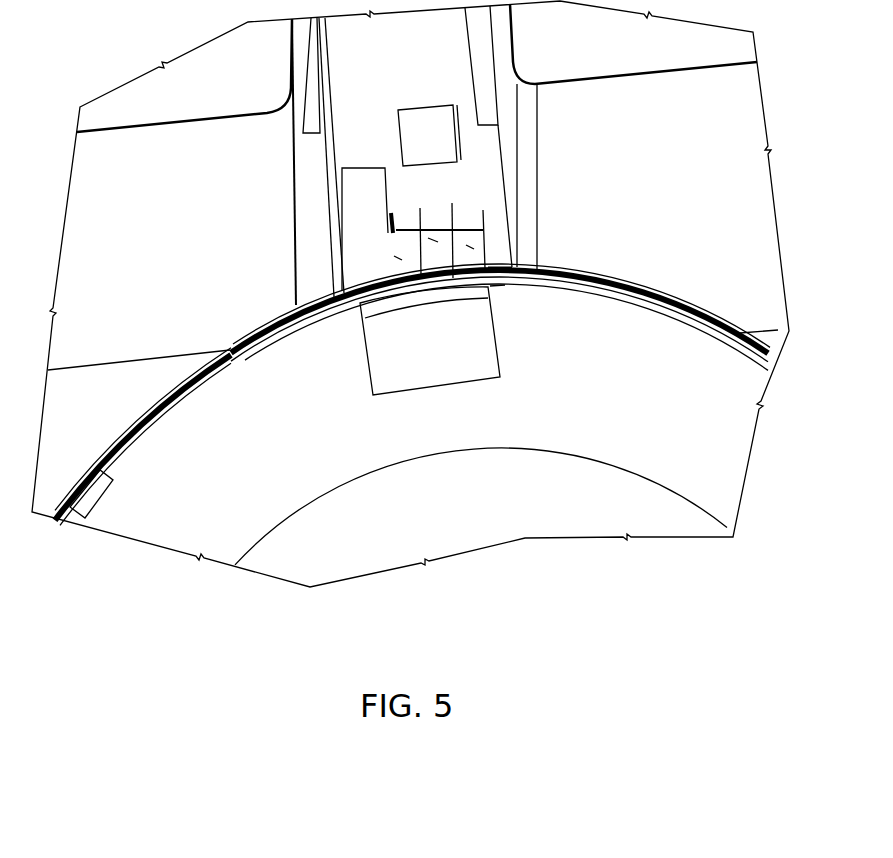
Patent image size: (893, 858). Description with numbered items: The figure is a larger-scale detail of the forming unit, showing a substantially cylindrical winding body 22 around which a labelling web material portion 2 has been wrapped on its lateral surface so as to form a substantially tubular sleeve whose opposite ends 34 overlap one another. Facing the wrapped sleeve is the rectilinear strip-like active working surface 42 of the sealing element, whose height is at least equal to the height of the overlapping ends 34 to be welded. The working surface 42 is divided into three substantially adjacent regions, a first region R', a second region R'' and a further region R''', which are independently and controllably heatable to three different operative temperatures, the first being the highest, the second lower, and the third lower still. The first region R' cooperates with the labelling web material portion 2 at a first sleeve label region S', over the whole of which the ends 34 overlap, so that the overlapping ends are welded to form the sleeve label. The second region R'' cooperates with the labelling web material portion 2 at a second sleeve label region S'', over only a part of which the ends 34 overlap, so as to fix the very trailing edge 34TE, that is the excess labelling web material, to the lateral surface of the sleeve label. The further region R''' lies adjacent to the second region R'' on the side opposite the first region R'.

The labelling web material portion 2 is at (182, 377).
The winding body 22 is at (717, 462).
The overlapping ends 34 is at (316, 300).
The trailing edge 34TE is at (500, 267).
The working surface 42 is at (458, 218).
The first region R' is at (333, 191).
The second region R'' is at (545, 205).
The further region R''' is at (321, 226).
The first sleeve label region S' is at (430, 341).
The second sleeve label region S'' is at (532, 321).